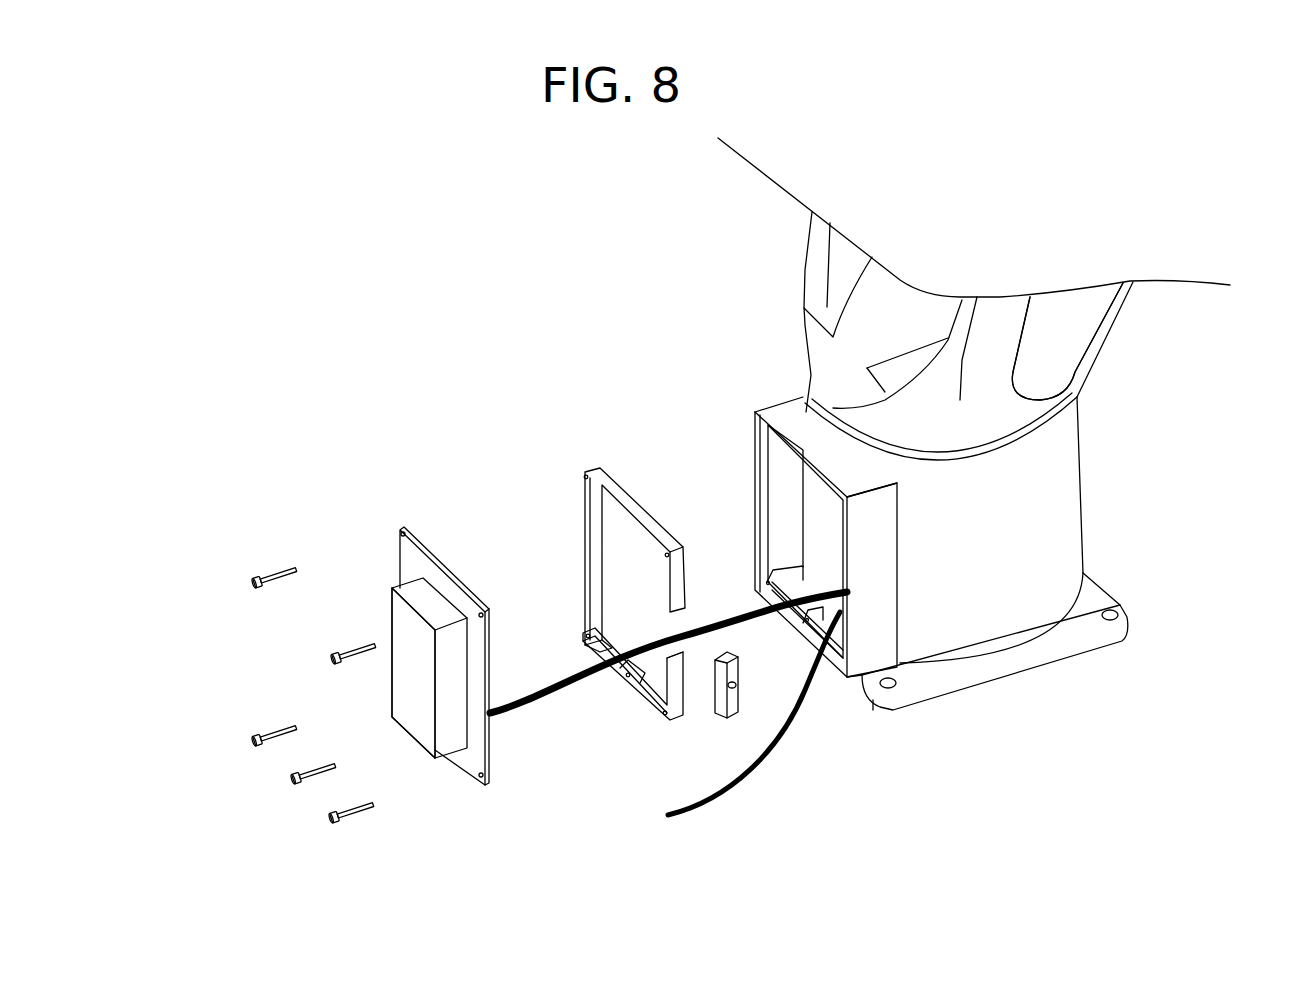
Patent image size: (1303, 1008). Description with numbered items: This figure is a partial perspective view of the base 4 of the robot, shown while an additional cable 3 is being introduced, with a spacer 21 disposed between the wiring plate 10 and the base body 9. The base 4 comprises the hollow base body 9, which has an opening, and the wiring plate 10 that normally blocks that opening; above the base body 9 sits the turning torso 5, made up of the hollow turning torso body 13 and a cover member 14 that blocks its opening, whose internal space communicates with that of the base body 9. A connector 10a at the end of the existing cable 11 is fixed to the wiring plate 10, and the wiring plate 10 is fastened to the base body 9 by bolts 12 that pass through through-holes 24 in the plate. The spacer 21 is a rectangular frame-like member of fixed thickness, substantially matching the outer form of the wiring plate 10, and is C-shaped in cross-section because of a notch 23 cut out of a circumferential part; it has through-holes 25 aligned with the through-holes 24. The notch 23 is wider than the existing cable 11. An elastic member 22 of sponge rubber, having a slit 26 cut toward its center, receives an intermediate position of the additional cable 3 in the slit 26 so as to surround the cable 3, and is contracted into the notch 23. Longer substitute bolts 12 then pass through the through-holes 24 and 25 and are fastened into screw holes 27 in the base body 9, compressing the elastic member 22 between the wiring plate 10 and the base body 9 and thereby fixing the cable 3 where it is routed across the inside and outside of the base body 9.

The additional cable 3 is at (758, 776).
The base 4 is at (1045, 678).
The turning torso 5 is at (790, 262).
The base body 9 is at (1050, 545).
The wiring plate 10 is at (407, 568).
The connector 10a is at (392, 622).
The cable 11 is at (507, 718).
The bolts 12 is at (248, 585).
The turning torso body 13 is at (858, 317).
The cover member 14 is at (1073, 347).
The spacer 21 is at (620, 470).
The elastic member 22 is at (752, 715).
The notch 23 is at (653, 660).
The through-holes 24 is at (402, 533).
The through-holes 25 is at (584, 476).
The slit 26 is at (716, 690).
The screw holes 27 is at (765, 583).